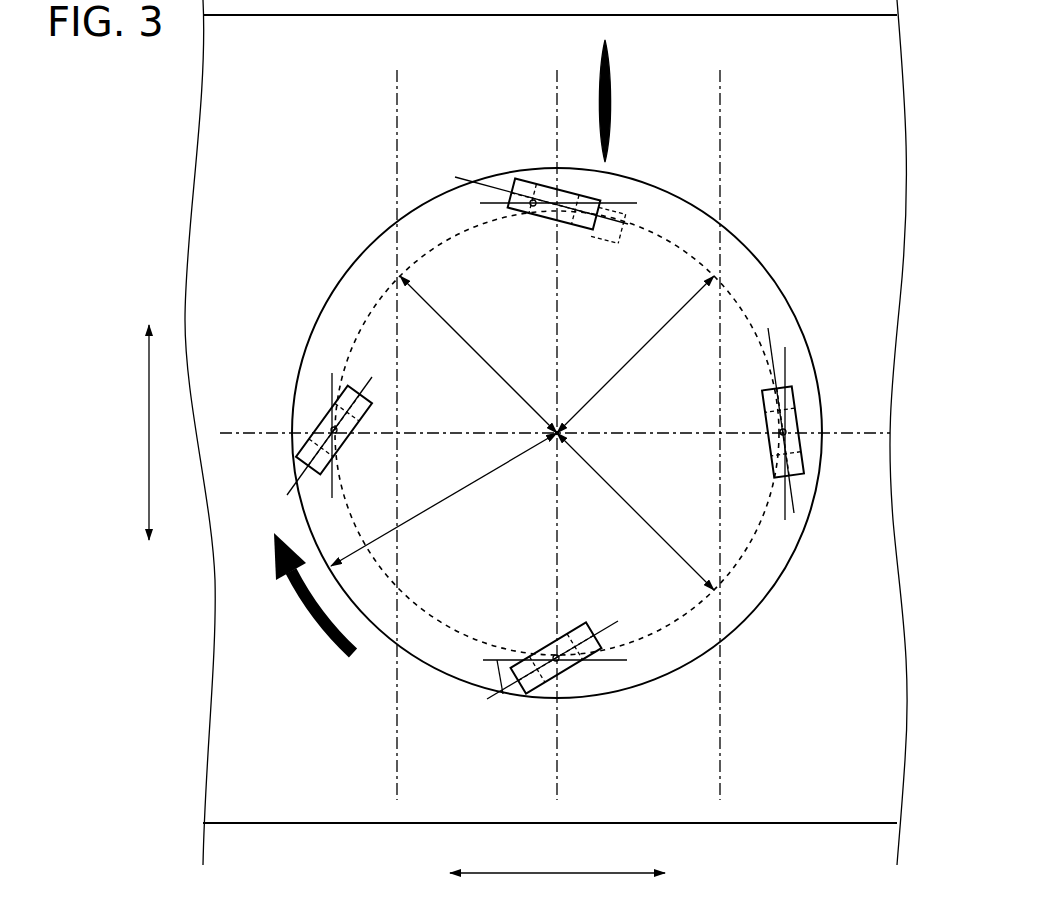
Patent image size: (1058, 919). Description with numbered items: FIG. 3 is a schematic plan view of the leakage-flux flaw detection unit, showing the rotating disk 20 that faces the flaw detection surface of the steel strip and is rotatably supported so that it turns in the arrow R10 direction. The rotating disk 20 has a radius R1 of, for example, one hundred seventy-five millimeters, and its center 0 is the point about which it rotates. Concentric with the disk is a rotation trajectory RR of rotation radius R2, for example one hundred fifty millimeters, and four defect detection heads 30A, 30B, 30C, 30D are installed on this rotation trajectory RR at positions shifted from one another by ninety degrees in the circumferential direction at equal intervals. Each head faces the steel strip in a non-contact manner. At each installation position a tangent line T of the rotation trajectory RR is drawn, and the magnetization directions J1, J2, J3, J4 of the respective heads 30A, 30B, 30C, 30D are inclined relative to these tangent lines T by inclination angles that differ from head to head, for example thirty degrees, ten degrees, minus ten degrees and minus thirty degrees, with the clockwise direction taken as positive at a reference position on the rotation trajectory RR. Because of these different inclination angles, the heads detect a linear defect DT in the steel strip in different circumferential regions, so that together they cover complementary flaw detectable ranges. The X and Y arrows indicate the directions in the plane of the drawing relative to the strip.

The rotating disk 20 is at (760, 293).
The defect detection head 30A is at (367, 428).
The defect detection head 30B is at (545, 229).
The defect detection head 30C is at (760, 432).
The defect detection head 30D is at (546, 646).
The linear defect DT is at (609, 115).
The rotation trajectory RR is at (733, 574).
The arrow R10 direction R10 is at (308, 620).
The radius of rotating disk R1 is at (522, 421).
The rotation radius R2 is at (557, 433).
The magnetization direction J1 is at (320, 450).
The magnetization direction J2 is at (524, 197).
The magnetization direction J3 is at (776, 410).
The magnetization direction J4 is at (561, 657).
The tangent line T is at (559, 436).
The rotation center 0 is at (548, 452).
The X direction X is at (134, 432).
The Y direction Y is at (557, 859).